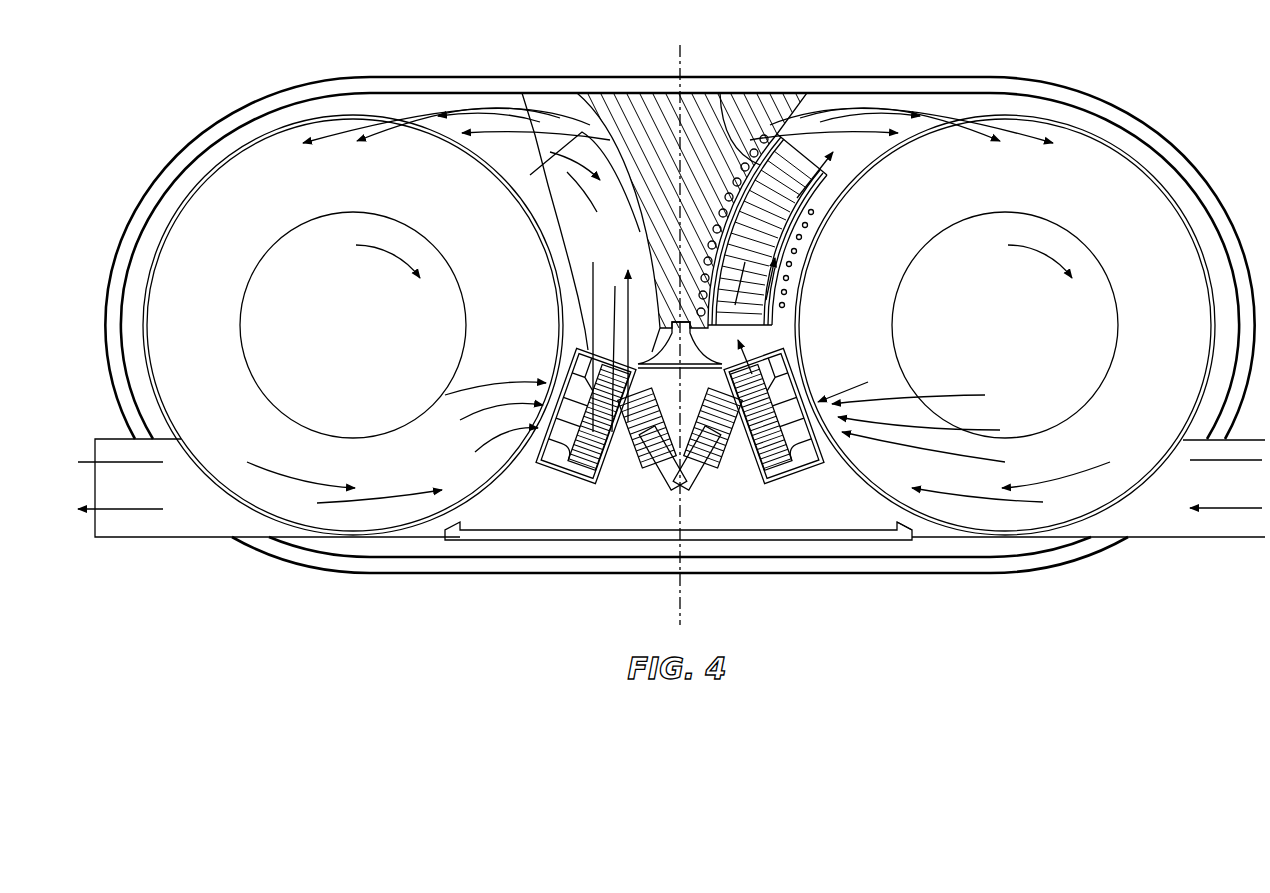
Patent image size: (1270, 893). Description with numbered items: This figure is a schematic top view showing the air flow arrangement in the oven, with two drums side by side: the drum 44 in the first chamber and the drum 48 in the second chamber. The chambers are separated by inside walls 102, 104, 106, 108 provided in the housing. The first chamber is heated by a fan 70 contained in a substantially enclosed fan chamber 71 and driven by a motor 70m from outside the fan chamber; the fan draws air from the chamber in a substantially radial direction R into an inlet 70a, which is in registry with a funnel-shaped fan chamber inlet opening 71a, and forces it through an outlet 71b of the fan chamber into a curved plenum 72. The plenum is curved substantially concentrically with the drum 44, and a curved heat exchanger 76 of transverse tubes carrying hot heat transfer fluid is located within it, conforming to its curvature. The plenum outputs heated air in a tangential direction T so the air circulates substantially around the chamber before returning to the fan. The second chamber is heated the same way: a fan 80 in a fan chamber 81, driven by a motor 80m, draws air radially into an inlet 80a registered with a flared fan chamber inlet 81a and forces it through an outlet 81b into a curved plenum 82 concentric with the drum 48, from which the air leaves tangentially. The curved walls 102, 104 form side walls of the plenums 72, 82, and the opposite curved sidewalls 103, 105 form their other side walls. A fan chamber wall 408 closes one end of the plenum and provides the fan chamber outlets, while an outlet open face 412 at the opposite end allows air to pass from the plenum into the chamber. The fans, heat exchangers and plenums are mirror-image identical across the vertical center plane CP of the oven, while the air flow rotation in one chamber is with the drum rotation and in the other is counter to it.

The drum 44 is at (1117, 333).
The drum 48 is at (252, 378).
The fan 70 is at (826, 433).
The inlet 70a is at (805, 376).
The motor 70m is at (703, 472).
The fan chamber 71 is at (792, 488).
The fan chamber inlet opening 71a is at (812, 356).
The outlet 71b is at (786, 336).
The curved plenum 72 is at (790, 140).
The curved heat exchanger 76 is at (775, 150).
The fan 80 is at (533, 436).
The inlet 80a is at (558, 381).
The motor 80m is at (645, 470).
The fan chamber 81 is at (568, 488).
The fan chamber inlet 81a is at (538, 356).
The outlet 81b is at (588, 338).
The curved plenum 82 is at (540, 140).
The inside wall 102 is at (628, 170).
The sidewall 103 is at (545, 205).
The inside wall 104 is at (713, 130).
The sidewall 105 is at (826, 205).
The inside wall 106 is at (478, 540).
The inside wall 108 is at (884, 540).
The fan chamber wall 408 is at (646, 338).
The outlet open face 412 is at (578, 125).
The vertical center plane CP is at (678, 60).
The tangential direction T is at (777, 251).
The radial direction R is at (911, 414).